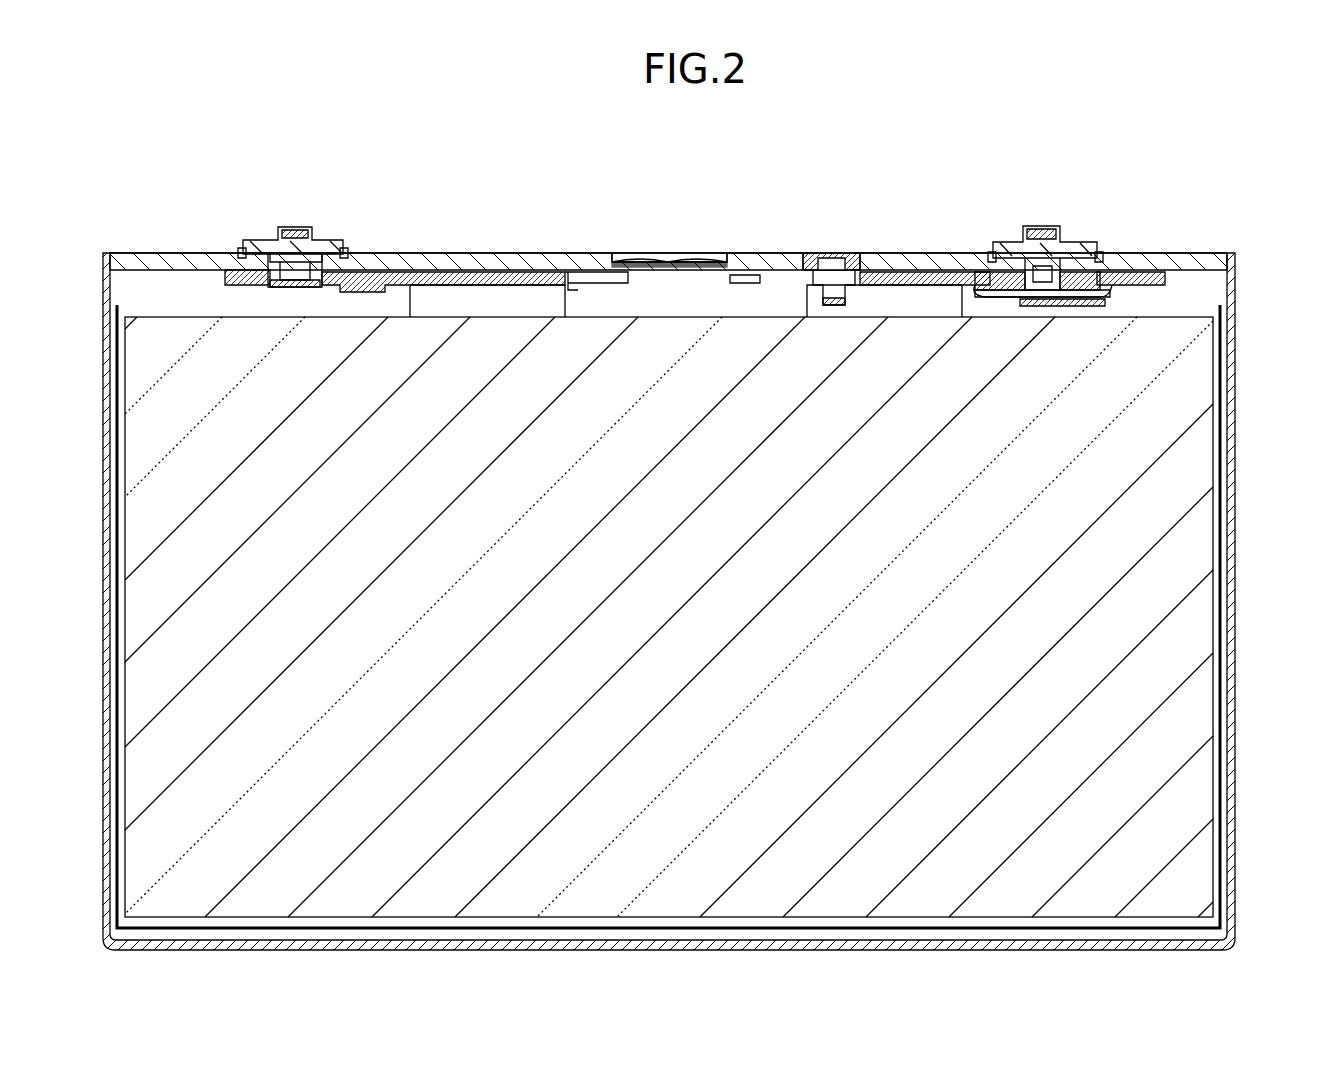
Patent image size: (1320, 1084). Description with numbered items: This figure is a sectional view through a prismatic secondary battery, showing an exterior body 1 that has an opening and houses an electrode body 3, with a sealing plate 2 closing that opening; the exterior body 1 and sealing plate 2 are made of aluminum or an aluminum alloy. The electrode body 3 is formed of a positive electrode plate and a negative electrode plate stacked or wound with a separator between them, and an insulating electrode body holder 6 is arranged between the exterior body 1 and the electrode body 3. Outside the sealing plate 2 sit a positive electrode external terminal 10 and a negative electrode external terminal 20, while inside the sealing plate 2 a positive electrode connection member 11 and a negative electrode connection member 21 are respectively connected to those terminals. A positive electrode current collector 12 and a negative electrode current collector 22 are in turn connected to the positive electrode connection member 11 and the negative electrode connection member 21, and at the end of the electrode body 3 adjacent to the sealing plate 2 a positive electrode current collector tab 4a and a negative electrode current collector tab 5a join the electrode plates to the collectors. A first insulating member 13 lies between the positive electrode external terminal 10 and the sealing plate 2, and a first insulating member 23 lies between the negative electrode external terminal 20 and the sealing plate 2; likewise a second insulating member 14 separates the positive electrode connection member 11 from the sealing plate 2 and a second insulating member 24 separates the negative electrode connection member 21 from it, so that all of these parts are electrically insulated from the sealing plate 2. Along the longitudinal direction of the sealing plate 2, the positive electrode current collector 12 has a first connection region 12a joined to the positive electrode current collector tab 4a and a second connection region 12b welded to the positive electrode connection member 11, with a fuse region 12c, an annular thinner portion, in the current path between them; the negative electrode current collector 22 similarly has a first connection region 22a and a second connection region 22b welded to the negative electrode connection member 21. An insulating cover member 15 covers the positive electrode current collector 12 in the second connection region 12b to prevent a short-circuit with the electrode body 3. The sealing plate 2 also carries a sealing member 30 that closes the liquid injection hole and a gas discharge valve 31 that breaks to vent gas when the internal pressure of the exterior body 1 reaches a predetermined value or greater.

The exterior body 1 is at (1237, 535).
The sealing plate 2 is at (735, 252).
The electrode body 3 is at (1195, 640).
The positive electrode current collector tab 4a is at (906, 300).
The negative electrode current collector tab 5a is at (525, 303).
The electrode body holder 6 is at (1222, 455).
The positive electrode external terminal 10 is at (1078, 243).
The positive electrode connection member 11 is at (1140, 266).
The positive electrode current collector 12 is at (1113, 235).
The first connection region 12a is at (940, 272).
The second connection region 12b is at (1006, 286).
The fuse region 12c is at (1127, 292).
The first insulating member 13 is at (1097, 250).
The second insulating member 14 is at (1000, 292).
The cover member 15 is at (1071, 306).
The negative electrode external terminal 20 is at (285, 232).
The negative electrode connection member 21 is at (350, 250).
The negative electrode current collector 22 is at (395, 210).
The first connection region 22a is at (365, 172).
The second connection region 22b is at (373, 252).
The first insulating member 23 is at (246, 250).
The second insulating member 24 is at (566, 272).
The sealing member 30 is at (826, 262).
The gas discharge valve 31 is at (645, 254).